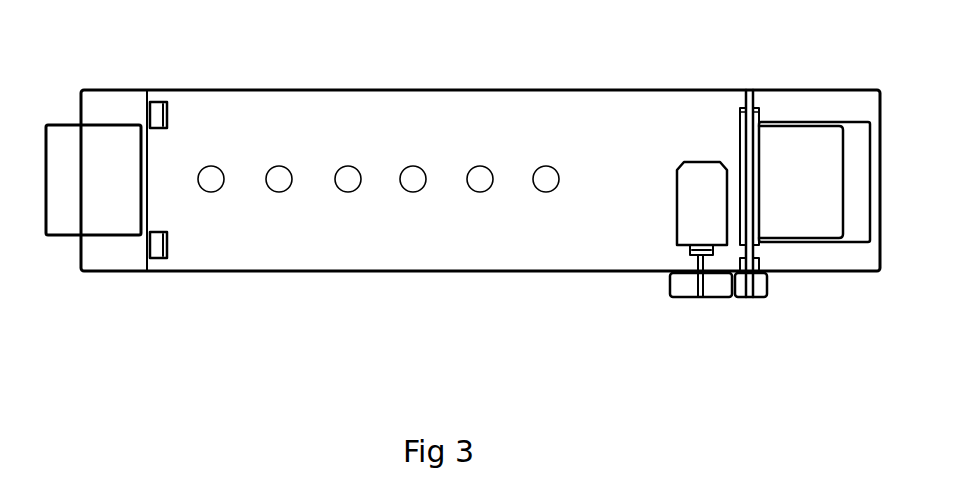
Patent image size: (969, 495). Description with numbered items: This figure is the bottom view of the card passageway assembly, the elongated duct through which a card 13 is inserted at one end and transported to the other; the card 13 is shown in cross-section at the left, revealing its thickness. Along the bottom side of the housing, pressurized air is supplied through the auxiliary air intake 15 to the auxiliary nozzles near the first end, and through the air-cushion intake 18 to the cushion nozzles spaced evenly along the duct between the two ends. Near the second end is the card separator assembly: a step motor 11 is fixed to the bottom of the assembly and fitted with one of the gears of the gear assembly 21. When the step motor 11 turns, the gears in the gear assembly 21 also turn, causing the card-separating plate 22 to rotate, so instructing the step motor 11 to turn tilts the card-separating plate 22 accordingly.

The step motor 11 is at (677, 218).
The card 13 is at (53, 125).
The auxiliary air intake 15 is at (170, 107).
The air-cushion intake 18 is at (279, 193).
The gear assembly 21 is at (752, 297).
The card-separating plate 22 is at (822, 243).